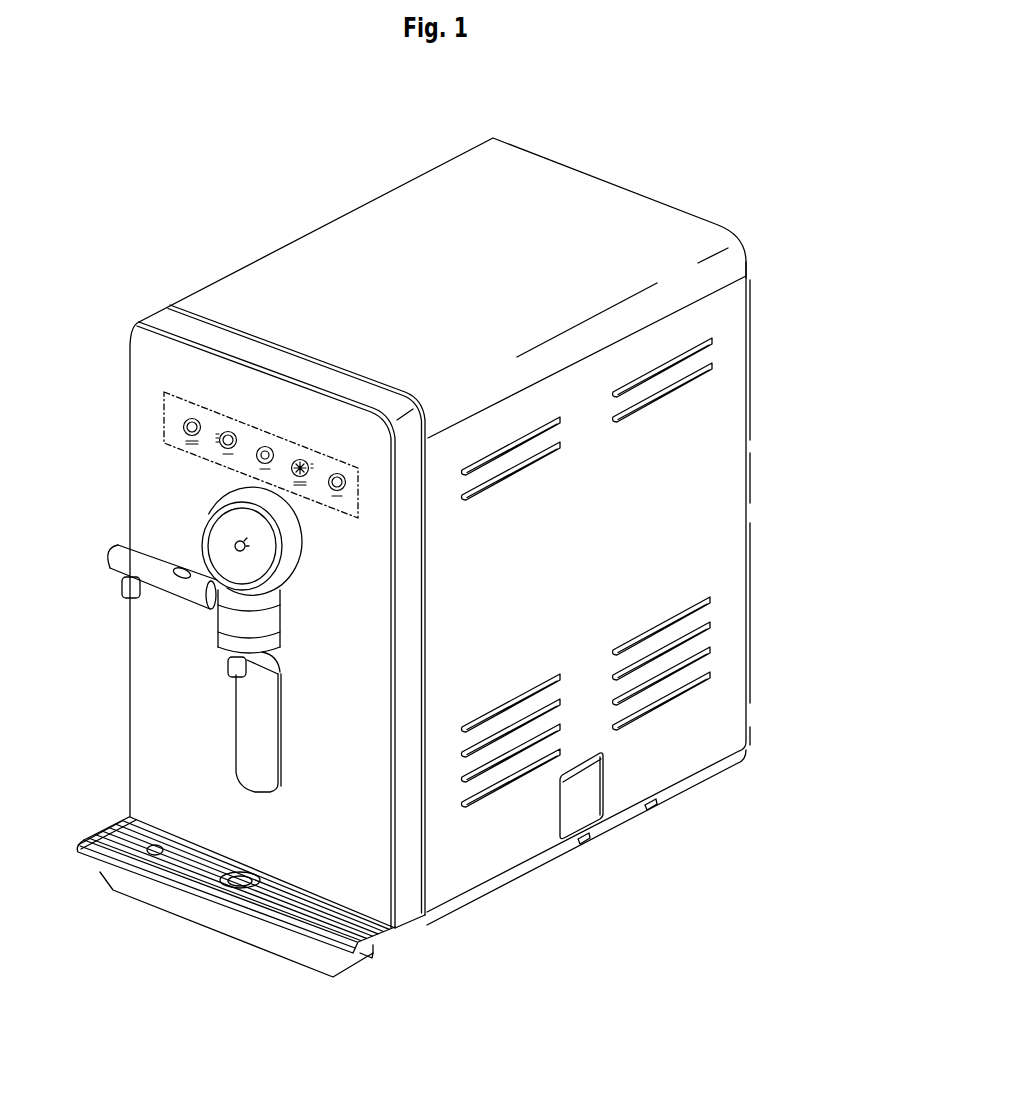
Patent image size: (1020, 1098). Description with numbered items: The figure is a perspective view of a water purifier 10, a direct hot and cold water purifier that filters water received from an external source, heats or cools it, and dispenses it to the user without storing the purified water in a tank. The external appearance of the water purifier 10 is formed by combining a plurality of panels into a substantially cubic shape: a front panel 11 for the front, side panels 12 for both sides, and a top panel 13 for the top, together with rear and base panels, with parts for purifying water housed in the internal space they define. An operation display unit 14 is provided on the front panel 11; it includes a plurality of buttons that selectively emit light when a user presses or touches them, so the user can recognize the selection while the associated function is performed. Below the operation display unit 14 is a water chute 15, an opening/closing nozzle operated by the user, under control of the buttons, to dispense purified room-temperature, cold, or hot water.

The water purifier 10 is at (641, 151).
The front panel 11 is at (140, 491).
The side panel 12 is at (735, 481).
The top panel 13 is at (377, 211).
The operation display unit 14 is at (164, 412).
The water chute 15 is at (180, 647).